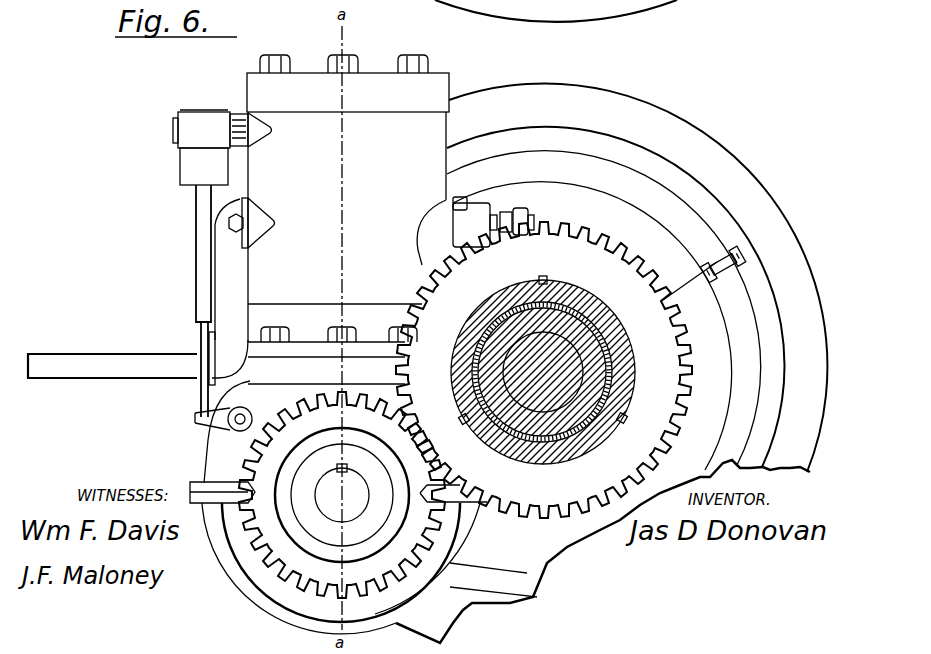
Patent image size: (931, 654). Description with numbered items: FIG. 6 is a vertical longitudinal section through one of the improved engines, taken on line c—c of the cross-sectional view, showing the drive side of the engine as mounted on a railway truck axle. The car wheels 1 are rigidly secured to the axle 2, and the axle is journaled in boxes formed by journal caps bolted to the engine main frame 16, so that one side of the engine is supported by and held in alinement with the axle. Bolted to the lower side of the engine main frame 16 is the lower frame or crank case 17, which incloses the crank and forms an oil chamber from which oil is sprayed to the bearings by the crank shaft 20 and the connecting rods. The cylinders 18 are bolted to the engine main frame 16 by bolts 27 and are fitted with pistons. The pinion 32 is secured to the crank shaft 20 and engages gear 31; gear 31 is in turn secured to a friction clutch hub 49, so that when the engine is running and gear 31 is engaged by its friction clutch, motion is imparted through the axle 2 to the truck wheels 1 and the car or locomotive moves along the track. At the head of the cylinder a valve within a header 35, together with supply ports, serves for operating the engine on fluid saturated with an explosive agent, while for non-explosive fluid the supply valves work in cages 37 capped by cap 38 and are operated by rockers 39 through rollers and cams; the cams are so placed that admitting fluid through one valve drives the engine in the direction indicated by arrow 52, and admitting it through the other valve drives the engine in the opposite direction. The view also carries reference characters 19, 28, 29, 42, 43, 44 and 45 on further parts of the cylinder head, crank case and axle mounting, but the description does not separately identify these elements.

The car wheels 1 is at (713, 146).
The axle 2 is at (572, 362).
The engine main frame 16 is at (208, 450).
The lower frame or crank case 17 is at (212, 547).
The cylinders 18 is at (255, 277).
The cylinder 19 is at (247, 90).
The crank shaft 20 is at (340, 518).
The bolts 27 is at (341, 327).
The head bolts 28 is at (410, 55).
The bar 29 is at (48, 379).
The gear 31 is at (624, 254).
The pinion 32 is at (287, 572).
The header 35 is at (480, 206).
The cages 37 is at (180, 172).
The cap 38 is at (186, 110).
The rockers 39 is at (195, 418).
The housing flange 42 is at (672, 221).
The flange bolt 43 is at (735, 284).
The gear hub 44 is at (462, 382).
The bearing ring 45 is at (475, 360).
The friction clutch hub 49 is at (548, 278).
The arrow 52 is at (222, 216).